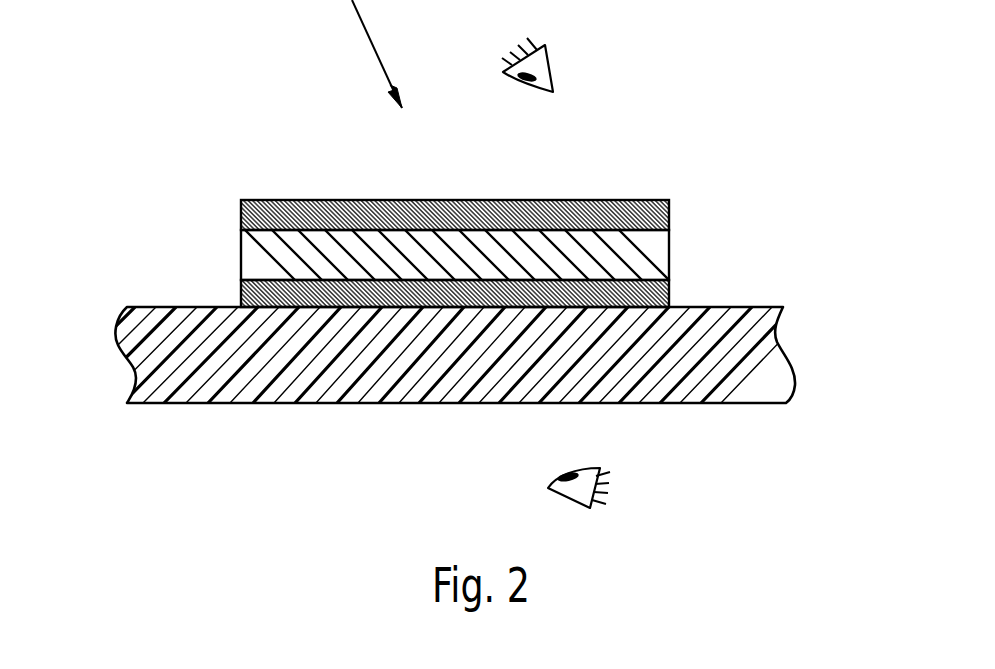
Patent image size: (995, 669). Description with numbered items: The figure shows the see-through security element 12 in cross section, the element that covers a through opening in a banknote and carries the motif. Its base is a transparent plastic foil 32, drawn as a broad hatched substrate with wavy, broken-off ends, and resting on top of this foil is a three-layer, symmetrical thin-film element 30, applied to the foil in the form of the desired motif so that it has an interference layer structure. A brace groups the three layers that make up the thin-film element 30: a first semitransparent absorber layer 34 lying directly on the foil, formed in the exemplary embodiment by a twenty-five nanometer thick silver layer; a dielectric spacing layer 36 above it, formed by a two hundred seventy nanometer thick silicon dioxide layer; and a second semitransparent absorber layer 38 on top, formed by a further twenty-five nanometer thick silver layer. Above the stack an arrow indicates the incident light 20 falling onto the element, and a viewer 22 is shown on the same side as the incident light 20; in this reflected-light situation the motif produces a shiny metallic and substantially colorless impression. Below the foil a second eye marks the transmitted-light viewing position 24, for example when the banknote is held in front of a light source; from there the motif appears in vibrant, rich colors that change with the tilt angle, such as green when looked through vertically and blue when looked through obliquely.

The see-through security element 12 is at (133, 209).
The incident light 20 is at (366, 28).
The viewer 22 is at (548, 66).
The viewing position 24 is at (598, 488).
The thin-film element 30 is at (516, 249).
The transparent plastic foil 32 is at (778, 376).
The first semitransparent absorber layer 34 is at (660, 296).
The dielectric spacing layer 36 is at (660, 254).
The second semitransparent absorber layer 38 is at (484, 213).